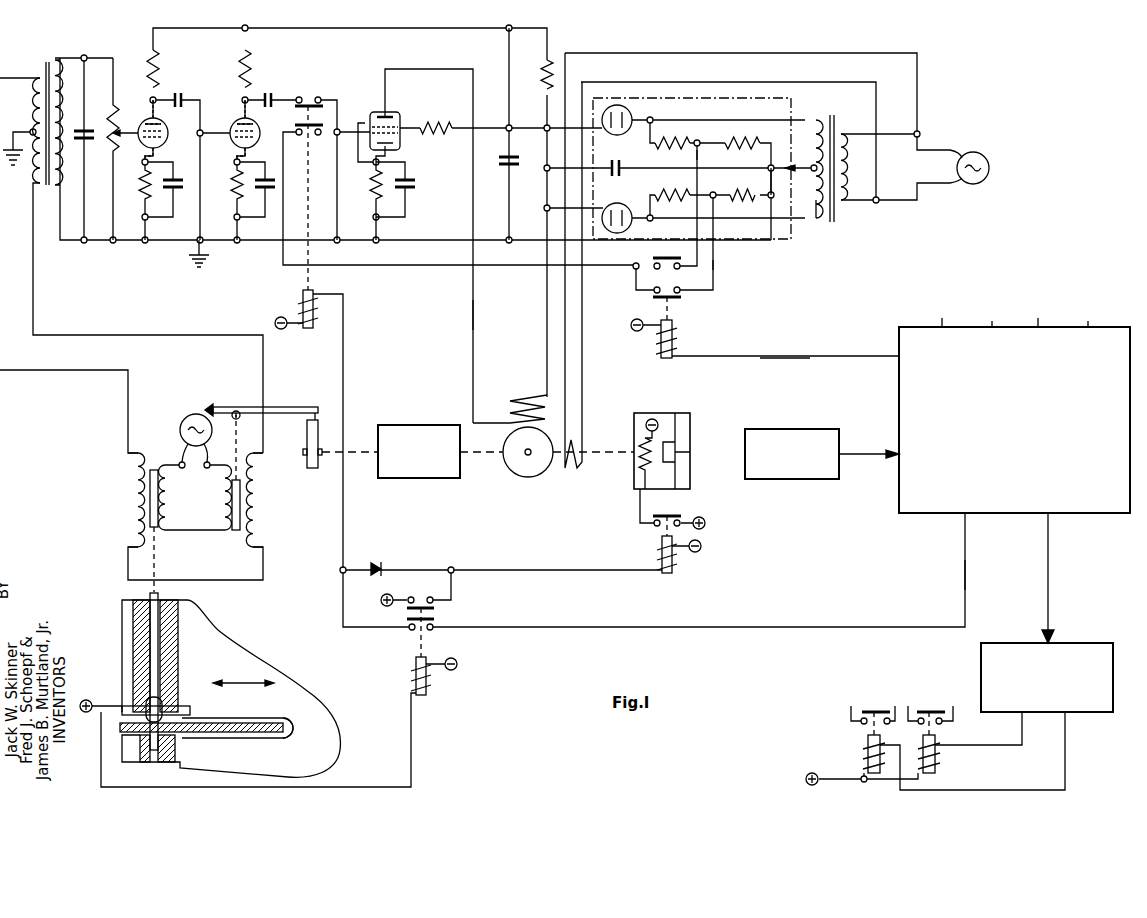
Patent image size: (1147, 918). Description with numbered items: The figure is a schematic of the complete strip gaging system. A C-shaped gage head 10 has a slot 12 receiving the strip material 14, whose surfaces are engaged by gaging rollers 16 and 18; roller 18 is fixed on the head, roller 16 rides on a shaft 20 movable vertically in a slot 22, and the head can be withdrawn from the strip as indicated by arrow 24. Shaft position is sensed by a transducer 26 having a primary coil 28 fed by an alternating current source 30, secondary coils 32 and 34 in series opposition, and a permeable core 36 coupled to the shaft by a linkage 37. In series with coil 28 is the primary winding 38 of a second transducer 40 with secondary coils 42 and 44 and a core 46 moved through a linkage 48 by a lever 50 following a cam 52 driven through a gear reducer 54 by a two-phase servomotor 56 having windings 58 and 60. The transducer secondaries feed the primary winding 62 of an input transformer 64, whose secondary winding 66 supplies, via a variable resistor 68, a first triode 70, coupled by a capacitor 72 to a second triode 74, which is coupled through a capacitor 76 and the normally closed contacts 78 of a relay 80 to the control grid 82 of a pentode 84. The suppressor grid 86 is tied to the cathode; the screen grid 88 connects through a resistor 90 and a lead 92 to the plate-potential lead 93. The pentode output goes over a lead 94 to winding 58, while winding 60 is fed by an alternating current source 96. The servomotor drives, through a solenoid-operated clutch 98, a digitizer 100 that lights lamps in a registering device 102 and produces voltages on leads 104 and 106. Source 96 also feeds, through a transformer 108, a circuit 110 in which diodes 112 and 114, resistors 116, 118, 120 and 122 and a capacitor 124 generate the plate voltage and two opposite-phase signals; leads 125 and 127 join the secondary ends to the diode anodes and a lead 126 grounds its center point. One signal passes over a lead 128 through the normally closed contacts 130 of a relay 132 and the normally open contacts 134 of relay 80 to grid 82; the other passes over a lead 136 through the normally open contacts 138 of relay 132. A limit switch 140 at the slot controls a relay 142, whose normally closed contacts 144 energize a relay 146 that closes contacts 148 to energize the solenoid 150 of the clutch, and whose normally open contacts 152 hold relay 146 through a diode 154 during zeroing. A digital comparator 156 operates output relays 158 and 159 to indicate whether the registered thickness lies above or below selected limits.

The gage head 10 is at (228, 648).
The slot 12 is at (250, 738).
The strip material 14 is at (238, 722).
The upper gaging roller 16 is at (170, 700).
The lower gaging roller 18 is at (162, 748).
The shaft 20 is at (160, 643).
The slot 22 is at (180, 604).
The arrow 24 is at (238, 678).
The electromechanical transducer 26 is at (132, 500).
The primary coil 28 is at (172, 500).
The source of alternating current 30 is at (190, 415).
The secondary coil 32 is at (138, 462).
The secondary coil 34 is at (136, 527).
The core 36 is at (154, 468).
The mechanical linkage 37 is at (158, 564).
The primary winding 38 is at (220, 484).
The second electromechanical transducer 40 is at (280, 499).
The secondary coil 42 is at (255, 464).
The secondary coil 44 is at (258, 537).
The core 46 is at (236, 531).
The mechanical linkage 48 is at (238, 452).
The lever 50 is at (273, 407).
The cam 52 is at (323, 444).
The gear reducer 54 is at (426, 424).
The two phase servomotor 56 is at (520, 471).
The winding 58 is at (525, 399).
The winding 60 is at (576, 470).
The primary winding 62 is at (36, 104).
The input transformer 64 is at (47, 72).
The secondary winding 66 is at (64, 153).
The variable resistor 68 is at (118, 118).
The first triode amplifier tube 70 is at (168, 146).
The capacitor 72 is at (185, 92).
The second triode amplifier tube 74 is at (236, 120).
The capacitor 76 is at (272, 100).
The normally closed contacts 78 is at (312, 97).
The relay 80 is at (297, 302).
The control grid 82 is at (392, 143).
The pentode vacuum tube 84 is at (388, 108).
The suppressor grid 86 is at (370, 118).
The screen grid 88 is at (392, 124).
The resistor 90 is at (443, 124).
The lead 92 is at (488, 128).
The lead 93 is at (545, 193).
The lead 94 is at (470, 308).
The source of alternating current voltage 96 is at (984, 164).
The solenoid-operated clutch 98 is at (674, 413).
The digitizer 100 is at (789, 429).
The registering device 102 is at (899, 333).
The lead 104 is at (963, 568).
The lead 106 is at (782, 357).
The transformer 108 is at (838, 212).
The circuit 110 is at (742, 98).
The diode 112 is at (628, 226).
The diode 114 is at (633, 115).
The resistor 116 is at (663, 193).
The resistor 118 is at (735, 195).
The resistor 120 is at (675, 143).
The resistor 122 is at (743, 143).
The capacitor 124 is at (622, 164).
The lead 125 is at (806, 120).
The lead 126 is at (790, 181).
The lead 127 is at (806, 220).
The lead 128 is at (715, 268).
The normally closed contacts 130 is at (682, 298).
The relay 132 is at (677, 340).
The normally open contacts 134 is at (296, 130).
The lead 136 is at (700, 157).
The normally open contacts 138 is at (652, 262).
The limit switch 140 is at (118, 704).
The relay 142 is at (428, 684).
The normally closed contacts 144 is at (436, 606).
The relay 146 is at (677, 568).
The contacts 148 is at (673, 516).
The solenoid 150 is at (640, 442).
The normally open contacts 152 is at (433, 631).
The diode 154 is at (384, 550).
The digital comparator 156 is at (981, 654).
The first output relay 158 is at (935, 757).
The second output relay 159 is at (868, 750).